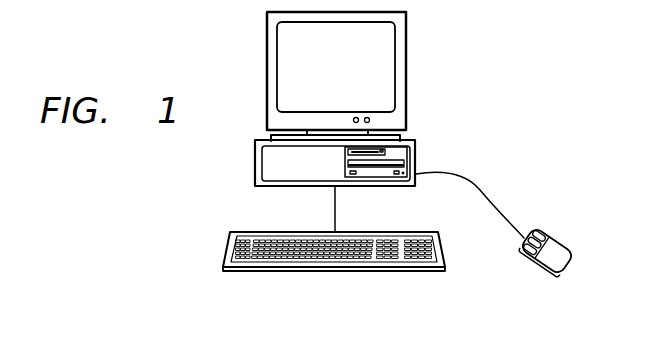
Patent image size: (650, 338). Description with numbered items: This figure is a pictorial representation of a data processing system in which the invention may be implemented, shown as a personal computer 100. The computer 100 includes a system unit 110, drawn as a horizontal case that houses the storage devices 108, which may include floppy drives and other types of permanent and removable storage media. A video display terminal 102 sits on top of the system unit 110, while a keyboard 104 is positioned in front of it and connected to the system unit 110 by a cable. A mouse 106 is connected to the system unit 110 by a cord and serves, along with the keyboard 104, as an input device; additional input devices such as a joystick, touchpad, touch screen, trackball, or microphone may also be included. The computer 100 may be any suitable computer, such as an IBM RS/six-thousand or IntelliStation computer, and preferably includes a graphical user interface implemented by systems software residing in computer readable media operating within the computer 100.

The computer 100 is at (450, 97).
The video display terminal 102 is at (267, 72).
The keyboard 104 is at (226, 247).
The mouse 106 is at (530, 258).
The storage devices 108 is at (408, 169).
The system unit 110 is at (256, 166).